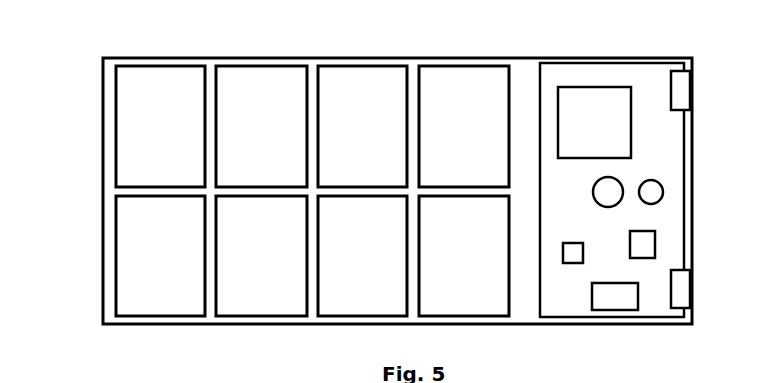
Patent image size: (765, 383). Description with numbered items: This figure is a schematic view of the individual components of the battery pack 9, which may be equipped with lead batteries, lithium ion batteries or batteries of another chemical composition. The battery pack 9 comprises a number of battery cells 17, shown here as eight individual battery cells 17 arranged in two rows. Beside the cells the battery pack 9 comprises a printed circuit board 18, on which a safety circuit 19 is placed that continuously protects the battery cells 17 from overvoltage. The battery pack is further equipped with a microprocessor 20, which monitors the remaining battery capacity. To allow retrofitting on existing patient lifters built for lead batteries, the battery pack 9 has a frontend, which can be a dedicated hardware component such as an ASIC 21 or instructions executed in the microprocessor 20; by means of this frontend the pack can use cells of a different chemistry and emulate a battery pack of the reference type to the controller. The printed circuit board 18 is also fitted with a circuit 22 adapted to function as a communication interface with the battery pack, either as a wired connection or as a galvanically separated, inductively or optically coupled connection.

The battery pack 9 is at (72, 56).
The battery cells 17 is at (156, 246).
The printed circuit board 18 is at (652, 83).
The safety circuit 19 is at (586, 100).
The microprocessor 20 is at (573, 257).
The ASIC 21 is at (646, 243).
The circuit 22 is at (622, 292).